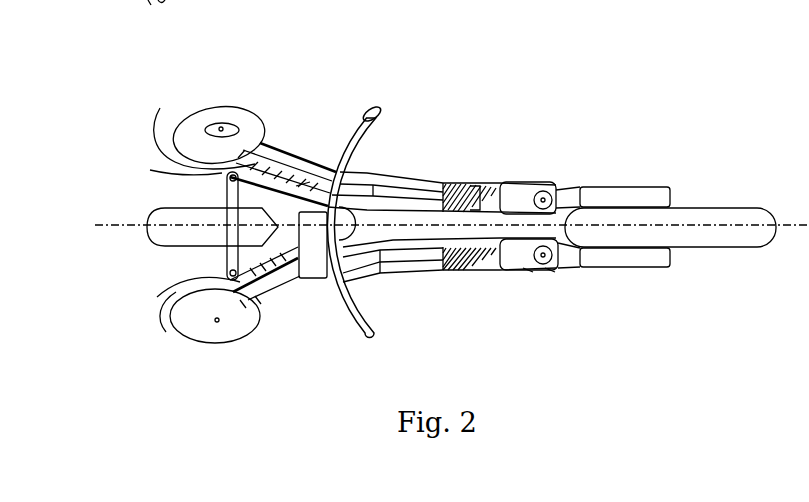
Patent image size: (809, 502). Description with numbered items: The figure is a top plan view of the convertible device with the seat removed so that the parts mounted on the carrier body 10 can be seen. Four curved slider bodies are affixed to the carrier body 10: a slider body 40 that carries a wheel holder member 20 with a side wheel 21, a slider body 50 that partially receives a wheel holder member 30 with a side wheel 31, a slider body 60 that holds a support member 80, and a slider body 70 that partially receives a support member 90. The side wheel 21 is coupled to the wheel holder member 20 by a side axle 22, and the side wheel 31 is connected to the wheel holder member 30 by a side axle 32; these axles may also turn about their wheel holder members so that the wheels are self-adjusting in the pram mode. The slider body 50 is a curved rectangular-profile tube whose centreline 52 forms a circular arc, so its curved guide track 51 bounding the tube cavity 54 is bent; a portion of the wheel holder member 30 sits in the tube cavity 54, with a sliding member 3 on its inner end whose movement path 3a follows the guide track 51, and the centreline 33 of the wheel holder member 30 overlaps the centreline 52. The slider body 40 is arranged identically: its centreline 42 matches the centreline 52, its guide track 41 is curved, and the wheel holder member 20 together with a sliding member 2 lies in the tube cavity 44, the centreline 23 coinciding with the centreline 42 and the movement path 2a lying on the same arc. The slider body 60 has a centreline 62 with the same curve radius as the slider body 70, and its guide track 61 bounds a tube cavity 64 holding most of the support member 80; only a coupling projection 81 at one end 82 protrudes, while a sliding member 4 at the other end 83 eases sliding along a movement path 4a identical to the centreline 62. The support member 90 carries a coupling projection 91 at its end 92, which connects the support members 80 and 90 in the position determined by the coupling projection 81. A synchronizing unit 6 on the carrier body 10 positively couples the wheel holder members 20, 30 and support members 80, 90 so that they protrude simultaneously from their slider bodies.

The sliding member 2 is at (512, 185).
The movement path 2a is at (535, 185).
The sliding member 3 is at (560, 272).
The movement path 3a is at (560, 272).
The sliding member 4 is at (548, 272).
The movement path 4a is at (525, 272).
The synchronizing unit 6 is at (310, 275).
The carrier body 10 is at (441, 185).
The wheel holder member 20 is at (428, 190).
The side wheel 21 is at (222, 128).
The side axle 22 is at (218, 127).
The centreline 23 is at (412, 185).
The wheel holder member 30 is at (447, 262).
The side wheel 31 is at (237, 325).
The side axle 32 is at (217, 323).
The centreline 33 is at (513, 268).
The slider body 40 is at (306, 205).
The guide track 41 is at (403, 183).
The centreline 42 is at (320, 185).
The tube cavity 44 is at (550, 186).
The slider body 50 is at (300, 283).
The guide track 51 is at (417, 262).
The centreline 52 is at (346, 290).
The tube cavity 54 is at (550, 260).
The slider body 60 is at (296, 205).
The guide track 61 is at (488, 267).
The centreline 62 is at (200, 118).
The tube cavity 64 is at (506, 185).
The slider body 70 is at (282, 295).
The support member 80 is at (372, 110).
The coupling projection 81 is at (225, 197).
The end 82 is at (150, 170).
The other end 83 is at (476, 188).
The support member 90 is at (165, 316).
The coupling projection 91 is at (225, 257).
The end 92 is at (185, 280).